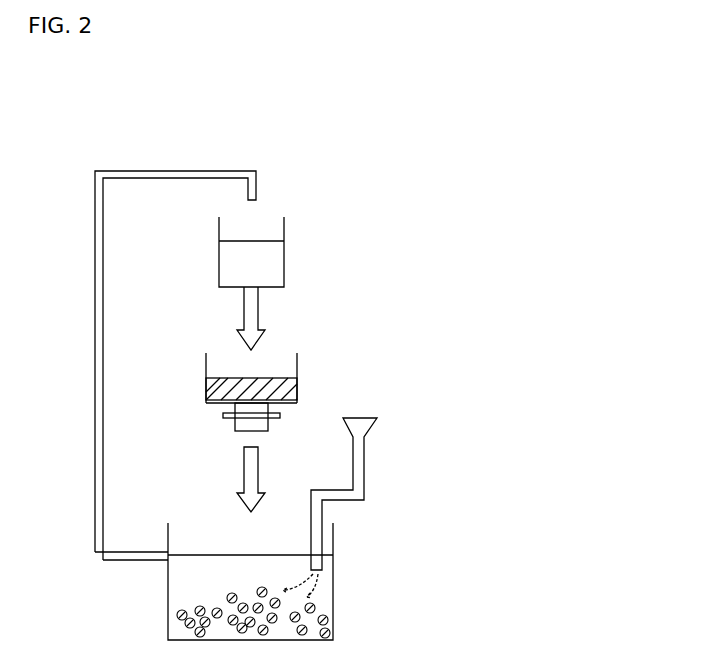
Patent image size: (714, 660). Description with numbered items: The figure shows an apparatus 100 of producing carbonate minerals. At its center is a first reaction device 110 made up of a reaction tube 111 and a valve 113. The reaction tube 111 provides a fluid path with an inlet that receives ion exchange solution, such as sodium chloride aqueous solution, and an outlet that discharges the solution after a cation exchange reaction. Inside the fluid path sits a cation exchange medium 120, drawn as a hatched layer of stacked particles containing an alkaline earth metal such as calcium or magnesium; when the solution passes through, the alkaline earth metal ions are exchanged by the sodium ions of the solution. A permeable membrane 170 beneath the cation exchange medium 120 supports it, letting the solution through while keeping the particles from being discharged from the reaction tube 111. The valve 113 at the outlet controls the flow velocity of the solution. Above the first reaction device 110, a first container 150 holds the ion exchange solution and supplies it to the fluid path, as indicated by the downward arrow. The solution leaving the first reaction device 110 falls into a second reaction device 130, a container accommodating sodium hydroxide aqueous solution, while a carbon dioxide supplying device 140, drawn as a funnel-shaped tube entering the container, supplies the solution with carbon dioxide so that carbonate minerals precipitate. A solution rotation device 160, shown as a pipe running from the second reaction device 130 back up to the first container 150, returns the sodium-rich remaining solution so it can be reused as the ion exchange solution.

The apparatus of producing the carbonate minerals 100 is at (211, 103).
The first reaction device 110 is at (252, 392).
The reaction tube 111 is at (206, 366).
The valve 113 is at (223, 416).
The cation exchange medium 120 is at (292, 386).
The second reaction device 130 is at (333, 593).
The carbon dioxide supplying device 140 is at (364, 456).
The first container 150 is at (284, 258).
The solution rotation device 160 is at (95, 362).
The permeable membrane 170 is at (292, 410).